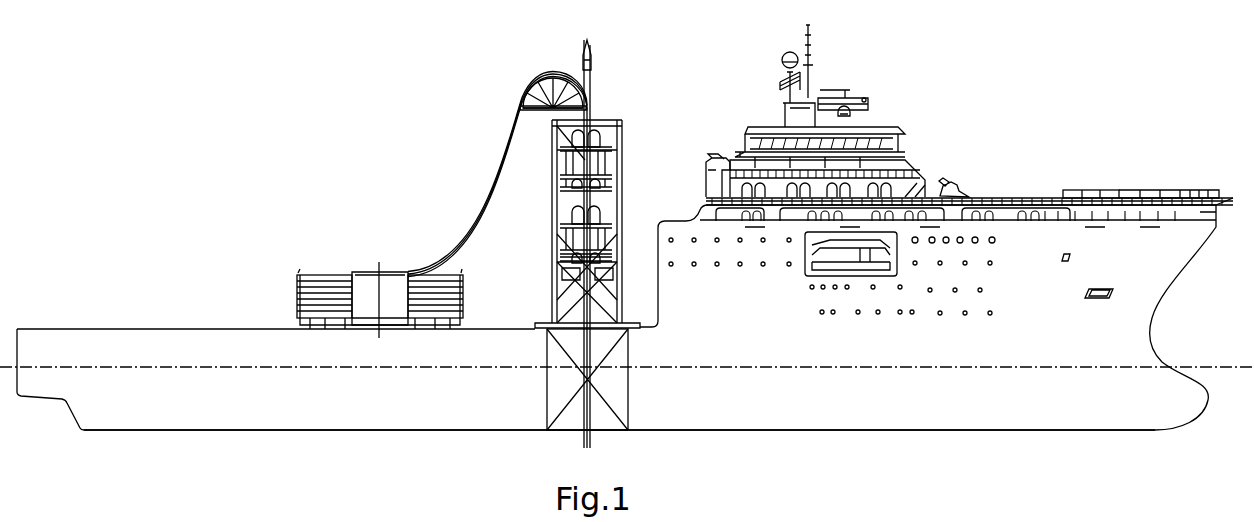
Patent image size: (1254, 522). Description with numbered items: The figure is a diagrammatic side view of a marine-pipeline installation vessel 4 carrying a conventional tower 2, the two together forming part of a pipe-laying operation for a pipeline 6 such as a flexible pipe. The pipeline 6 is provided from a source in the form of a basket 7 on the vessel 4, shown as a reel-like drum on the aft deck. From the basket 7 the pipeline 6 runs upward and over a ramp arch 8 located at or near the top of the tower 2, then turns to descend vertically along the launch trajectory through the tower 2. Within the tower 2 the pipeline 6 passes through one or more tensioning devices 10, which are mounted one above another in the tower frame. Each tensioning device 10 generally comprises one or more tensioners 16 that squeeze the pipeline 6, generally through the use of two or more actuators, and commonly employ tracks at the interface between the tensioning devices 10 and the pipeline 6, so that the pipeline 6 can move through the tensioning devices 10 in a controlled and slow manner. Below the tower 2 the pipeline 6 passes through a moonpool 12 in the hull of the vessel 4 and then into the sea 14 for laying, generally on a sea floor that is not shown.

The tower 2 is at (610, 300).
The marine-pipeline installation vessel 4 is at (627, 227).
The pipeline 6 is at (450, 243).
The basket 7 is at (322, 275).
The ramp arch 8 is at (540, 76).
The tensioning device 10 is at (612, 163).
The moonpool 12 is at (578, 380).
The sea 14 is at (392, 446).
The tensioner 16 is at (568, 187).